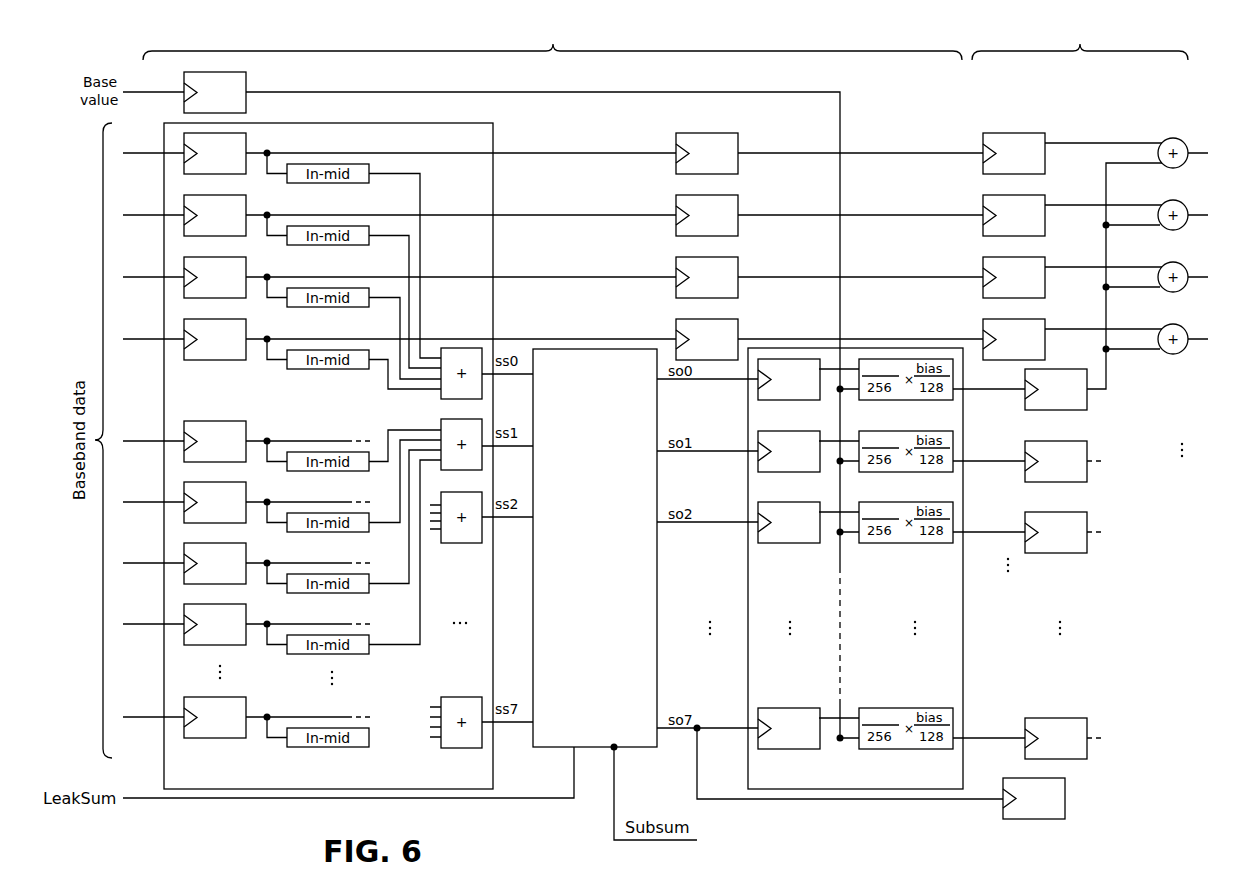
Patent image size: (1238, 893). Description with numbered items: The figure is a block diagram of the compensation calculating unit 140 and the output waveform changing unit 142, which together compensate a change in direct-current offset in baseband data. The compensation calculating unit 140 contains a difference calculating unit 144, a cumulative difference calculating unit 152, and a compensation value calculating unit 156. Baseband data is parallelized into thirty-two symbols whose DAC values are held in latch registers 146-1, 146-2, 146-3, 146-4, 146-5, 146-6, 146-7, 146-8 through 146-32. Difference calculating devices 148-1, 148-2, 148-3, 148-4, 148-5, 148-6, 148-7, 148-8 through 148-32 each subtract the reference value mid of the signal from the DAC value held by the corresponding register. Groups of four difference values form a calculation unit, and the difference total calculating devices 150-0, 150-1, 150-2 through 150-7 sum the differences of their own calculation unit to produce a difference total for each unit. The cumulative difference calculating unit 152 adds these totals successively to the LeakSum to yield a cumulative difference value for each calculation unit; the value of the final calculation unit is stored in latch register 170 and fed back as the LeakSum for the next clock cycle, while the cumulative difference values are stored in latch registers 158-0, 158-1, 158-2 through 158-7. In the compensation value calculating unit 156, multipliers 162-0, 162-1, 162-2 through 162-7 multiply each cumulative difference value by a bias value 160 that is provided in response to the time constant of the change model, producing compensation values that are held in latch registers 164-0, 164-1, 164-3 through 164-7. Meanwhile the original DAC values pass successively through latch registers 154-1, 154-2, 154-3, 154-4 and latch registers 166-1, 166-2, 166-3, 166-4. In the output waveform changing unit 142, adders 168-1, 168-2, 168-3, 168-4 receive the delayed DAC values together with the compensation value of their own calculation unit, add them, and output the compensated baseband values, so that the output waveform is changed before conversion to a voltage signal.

The compensation calculating unit 140 is at (737, 40).
The output waveform changing unit 142 is at (1213, 40).
The difference calculating unit 144 is at (463, 780).
The latch register 146-1 is at (248, 136).
The latch register 146-2 is at (248, 198).
The latch register 146-3 is at (248, 260).
The latch register 146-4 is at (248, 322).
The latch register 146-5 is at (248, 424).
The latch register 146-6 is at (248, 485).
The latch register 146-7 is at (248, 546).
The latch register 146-8 is at (248, 607).
The latch register 146-32 is at (248, 700).
The difference calculating device 148-1 is at (335, 183).
The difference calculating device 148-2 is at (335, 245).
The difference calculating device 148-3 is at (335, 307).
The difference calculating device 148-4 is at (335, 369).
The difference calculating device 148-5 is at (335, 471).
The difference calculating device 148-6 is at (335, 532).
The difference calculating device 148-7 is at (335, 593).
The difference calculating device 148-8 is at (335, 654).
The difference calculating device 148-32 is at (401, 740).
The difference total calculating device 150-0 is at (462, 399).
The difference total calculating device 150-1 is at (482, 419).
The difference total calculating device 150-2 is at (462, 543).
The difference total calculating device 150-7 is at (462, 697).
The cumulative difference calculating unit 152 is at (581, 725).
The latch register 154-1 is at (740, 136).
The latch register 154-2 is at (740, 198).
The latch register 154-3 is at (740, 260).
The latch register 154-4 is at (740, 322).
The compensation value calculating unit 156 is at (960, 786).
The latch register 158-0 is at (770, 400).
The latch register 158-1 is at (770, 472).
The latch register 158-2 is at (770, 543).
The latch register 158-7 is at (770, 708).
The bias value 160 is at (248, 75).
The multiplier 162-0 is at (880, 400).
The multiplier 162-1 is at (880, 472).
The multiplier 162-2 is at (880, 543).
The multiplier 162-7 is at (880, 708).
The latch register 164-0 is at (1037, 410).
The latch register 164-1 is at (1037, 482).
The latch register 164-3 is at (1037, 553).
The latch register 164-7 is at (1047, 718).
The latch register 166-1 is at (983, 140).
The latch register 166-2 is at (983, 202).
The latch register 166-3 is at (983, 264).
The latch register 166-4 is at (983, 326).
The adder 168-1 is at (1166, 140).
The adder 168-2 is at (1166, 202).
The adder 168-3 is at (1166, 264).
The adder 168-4 is at (1166, 326).
The latch register 170 is at (1112, 778).